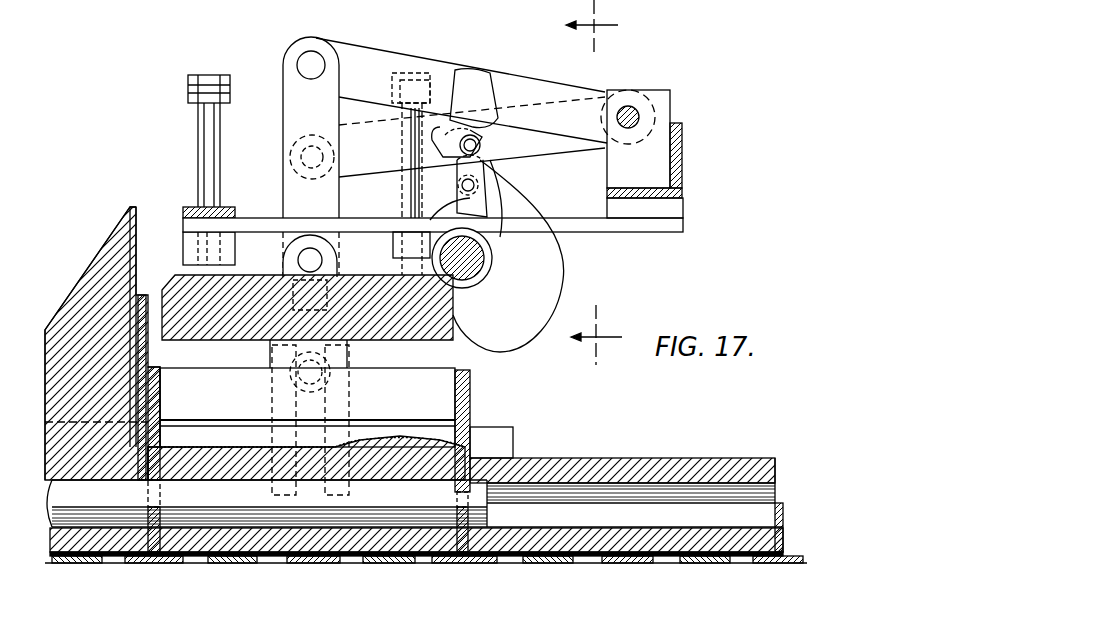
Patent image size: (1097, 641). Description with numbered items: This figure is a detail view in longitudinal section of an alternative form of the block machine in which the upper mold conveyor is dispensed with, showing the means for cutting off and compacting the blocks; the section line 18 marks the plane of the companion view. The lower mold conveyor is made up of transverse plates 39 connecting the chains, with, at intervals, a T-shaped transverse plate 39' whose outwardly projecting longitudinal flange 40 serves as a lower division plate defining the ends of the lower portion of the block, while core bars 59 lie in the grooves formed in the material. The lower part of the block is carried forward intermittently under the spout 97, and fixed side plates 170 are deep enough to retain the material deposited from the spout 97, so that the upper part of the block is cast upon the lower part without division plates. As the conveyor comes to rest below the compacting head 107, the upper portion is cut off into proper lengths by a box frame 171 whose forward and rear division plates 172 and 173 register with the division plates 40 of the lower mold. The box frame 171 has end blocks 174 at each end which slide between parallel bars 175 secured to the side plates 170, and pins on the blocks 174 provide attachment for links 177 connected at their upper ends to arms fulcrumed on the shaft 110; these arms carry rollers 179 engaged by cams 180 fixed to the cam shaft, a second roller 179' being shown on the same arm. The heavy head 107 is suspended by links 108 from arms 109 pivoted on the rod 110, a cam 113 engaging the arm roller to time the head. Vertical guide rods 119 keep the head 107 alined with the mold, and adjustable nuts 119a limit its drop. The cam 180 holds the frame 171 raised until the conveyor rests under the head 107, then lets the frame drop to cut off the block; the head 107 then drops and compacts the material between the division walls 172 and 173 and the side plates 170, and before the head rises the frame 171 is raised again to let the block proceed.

The section line 18 is at (594, 182).
The spout 97 is at (135, 263).
The nuts 119a is at (207, 93).
The guide rods 119 is at (207, 151).
The links 177 is at (433, 174).
The links 108 is at (291, 121).
The arms 109 is at (447, 49).
The rod 110 is at (633, 99).
The rollers 179 is at (426, 135).
The link 179' is at (455, 186).
The cam 113 is at (490, 205).
The cams 180 is at (557, 282).
The compacting head 107 is at (452, 345).
The parallel bars 175 is at (271, 350).
The box frame 171 is at (307, 407).
The end blocks 174 is at (274, 420).
The rear division plate 173 is at (162, 441).
The forward division plate 172 is at (470, 405).
The longitudinal flange 40 is at (459, 560).
The side plates 170 is at (514, 428).
The core bars 59 is at (299, 520).
The transverse plates 39 is at (233, 576).
The transverse plate 39' is at (617, 576).